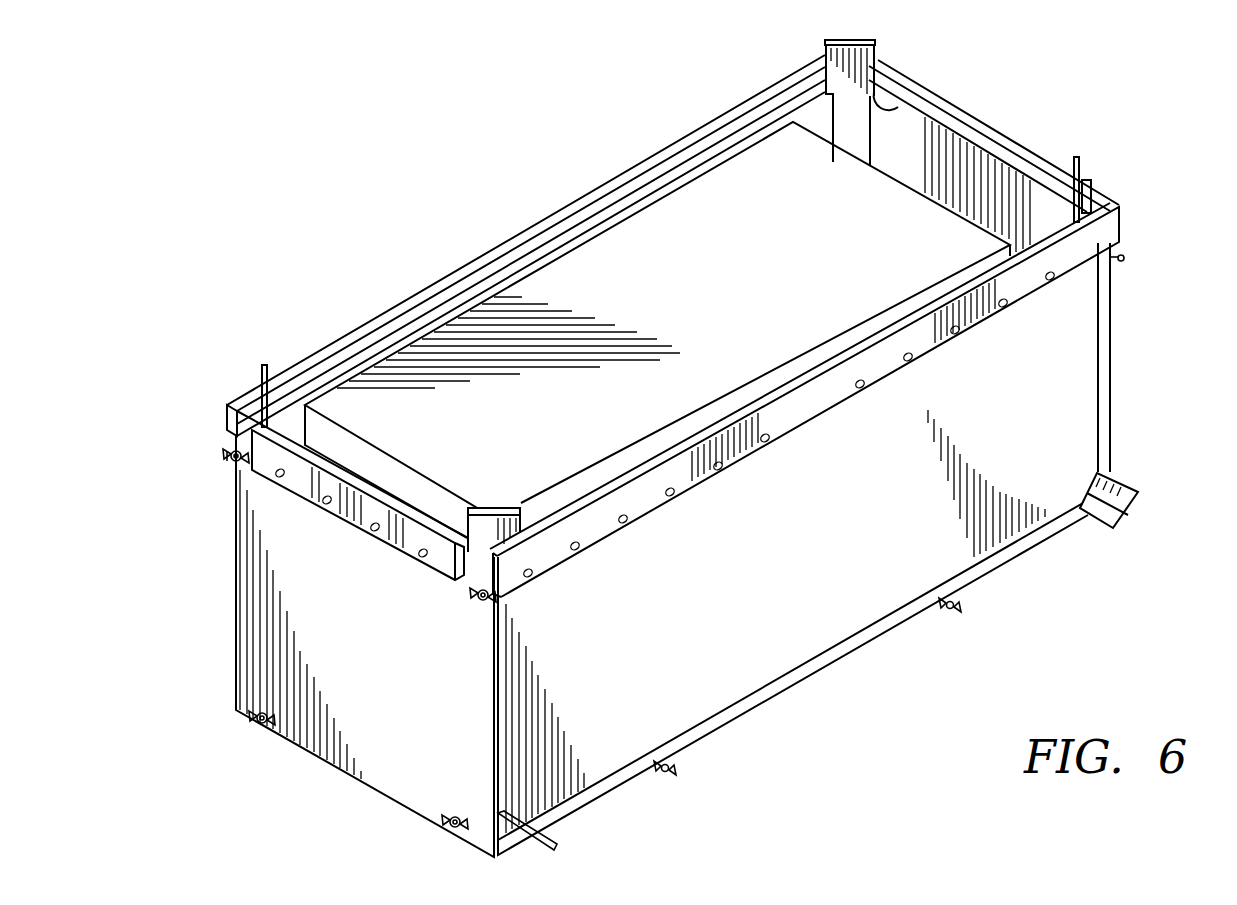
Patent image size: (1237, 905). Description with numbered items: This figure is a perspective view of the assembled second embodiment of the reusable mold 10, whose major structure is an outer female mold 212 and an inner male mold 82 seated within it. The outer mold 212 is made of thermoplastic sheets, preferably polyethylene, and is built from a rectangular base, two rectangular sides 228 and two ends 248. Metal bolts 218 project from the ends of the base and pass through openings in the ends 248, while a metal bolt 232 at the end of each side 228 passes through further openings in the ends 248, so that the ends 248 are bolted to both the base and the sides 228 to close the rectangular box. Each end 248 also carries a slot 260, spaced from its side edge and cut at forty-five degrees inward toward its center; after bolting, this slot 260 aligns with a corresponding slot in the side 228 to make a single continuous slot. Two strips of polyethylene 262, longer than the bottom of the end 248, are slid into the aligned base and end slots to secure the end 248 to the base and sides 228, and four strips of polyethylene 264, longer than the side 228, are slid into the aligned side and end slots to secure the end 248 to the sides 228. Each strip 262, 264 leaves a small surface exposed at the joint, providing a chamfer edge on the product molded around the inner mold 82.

The reusable mold 10 is at (321, 109).
The inner male mold 82 is at (838, 292).
The outer female mold 212 is at (738, 107).
The metal bolt 218 is at (258, 722).
The rectangular side 228 is at (772, 551).
The metal bolt 232 is at (228, 458).
The end 248 is at (315, 620).
The slot 260 is at (900, 107).
The strip of polyethylene 262 is at (1125, 512).
The strip of polyethylene 264 is at (263, 367).